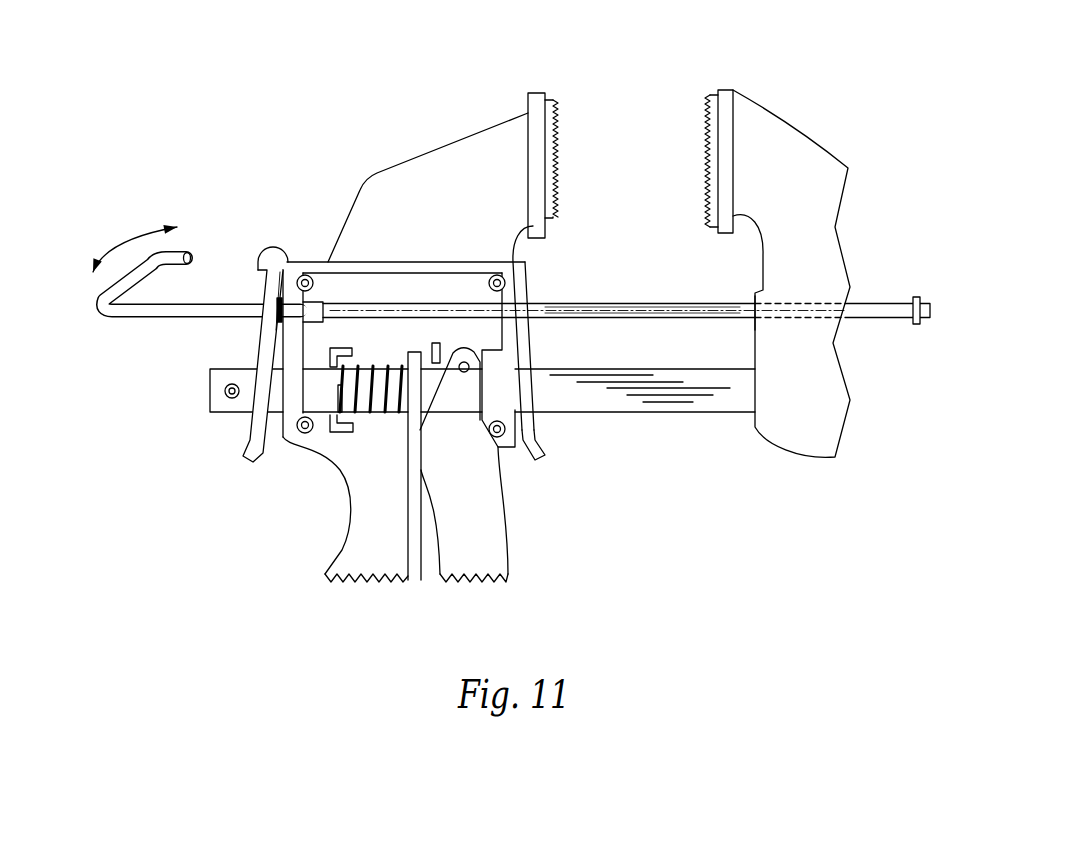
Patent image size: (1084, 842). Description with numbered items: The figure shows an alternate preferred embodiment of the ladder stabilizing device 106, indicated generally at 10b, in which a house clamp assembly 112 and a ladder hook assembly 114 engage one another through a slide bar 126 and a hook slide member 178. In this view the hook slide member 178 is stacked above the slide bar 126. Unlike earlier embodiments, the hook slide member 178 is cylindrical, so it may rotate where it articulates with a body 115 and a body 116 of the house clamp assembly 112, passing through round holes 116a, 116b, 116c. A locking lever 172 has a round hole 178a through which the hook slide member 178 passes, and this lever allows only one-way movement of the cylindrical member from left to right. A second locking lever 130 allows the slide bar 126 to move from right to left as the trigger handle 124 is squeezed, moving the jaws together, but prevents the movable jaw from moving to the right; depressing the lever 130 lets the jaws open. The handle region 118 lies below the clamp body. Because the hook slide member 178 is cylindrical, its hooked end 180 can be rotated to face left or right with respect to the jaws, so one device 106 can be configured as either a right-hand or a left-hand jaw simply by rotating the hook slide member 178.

The clamp assembly 10b is at (385, 80).
The ladder stabilizing device 106 is at (658, 485).
The house clamp assembly 112 is at (730, 83).
The body 115 is at (794, 146).
The body 116 is at (548, 258).
The round hole 116a is at (530, 300).
The round hole 116b is at (323, 302).
The round hole 116c is at (757, 326).
The hook slide member 178 is at (661, 304).
The round hole 178a is at (263, 320).
The hooked end 180 is at (192, 258).
The ladder hook assembly 114 is at (160, 335).
The locking lever 172 is at (243, 443).
The slide bar 126 is at (620, 406).
The locking lever 130 is at (543, 447).
The trigger handle 124 is at (449, 528).
The handle 118 is at (517, 540).